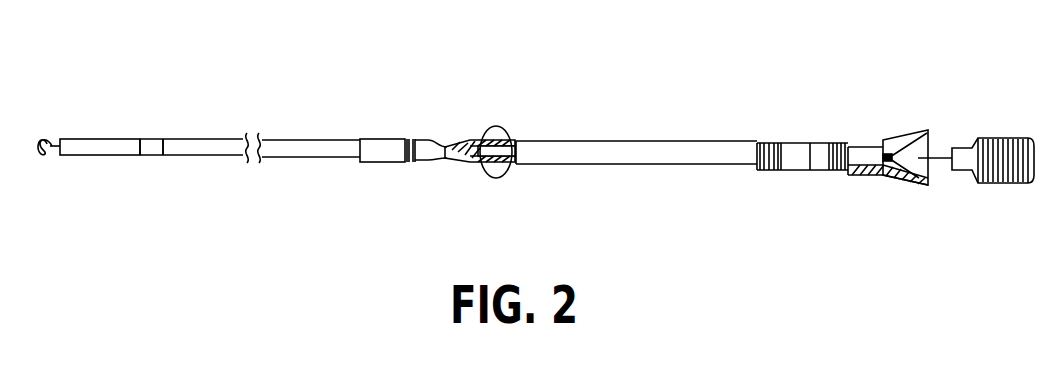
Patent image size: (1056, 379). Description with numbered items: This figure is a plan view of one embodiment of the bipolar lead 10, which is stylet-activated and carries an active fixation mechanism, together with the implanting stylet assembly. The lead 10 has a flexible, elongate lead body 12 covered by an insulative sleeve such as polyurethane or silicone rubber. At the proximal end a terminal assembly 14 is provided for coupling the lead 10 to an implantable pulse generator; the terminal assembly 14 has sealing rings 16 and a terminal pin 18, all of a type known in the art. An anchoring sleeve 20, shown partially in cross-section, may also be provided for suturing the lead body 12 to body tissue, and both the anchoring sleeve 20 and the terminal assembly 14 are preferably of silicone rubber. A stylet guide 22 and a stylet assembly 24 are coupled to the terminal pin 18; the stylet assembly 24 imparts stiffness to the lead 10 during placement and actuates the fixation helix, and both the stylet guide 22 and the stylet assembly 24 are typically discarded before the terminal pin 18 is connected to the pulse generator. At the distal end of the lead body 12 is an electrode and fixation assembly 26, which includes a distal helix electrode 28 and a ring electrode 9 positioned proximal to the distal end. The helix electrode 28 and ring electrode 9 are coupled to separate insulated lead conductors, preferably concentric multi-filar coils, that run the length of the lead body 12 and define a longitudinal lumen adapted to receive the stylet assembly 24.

The ring electrode 9 is at (157, 155).
The bipolar lead 10 is at (448, 88).
The lead body 12 is at (283, 158).
The terminal assembly 14 is at (791, 118).
The sealing rings 16 is at (760, 171).
The terminal pin 18 is at (868, 146).
The anchoring sleeve 20 is at (422, 163).
The stylet guide 22 is at (903, 186).
The stylet assembly 24 is at (942, 150).
The electrode and fixation assembly 26 is at (100, 128).
The helix electrode 28 is at (56, 150).